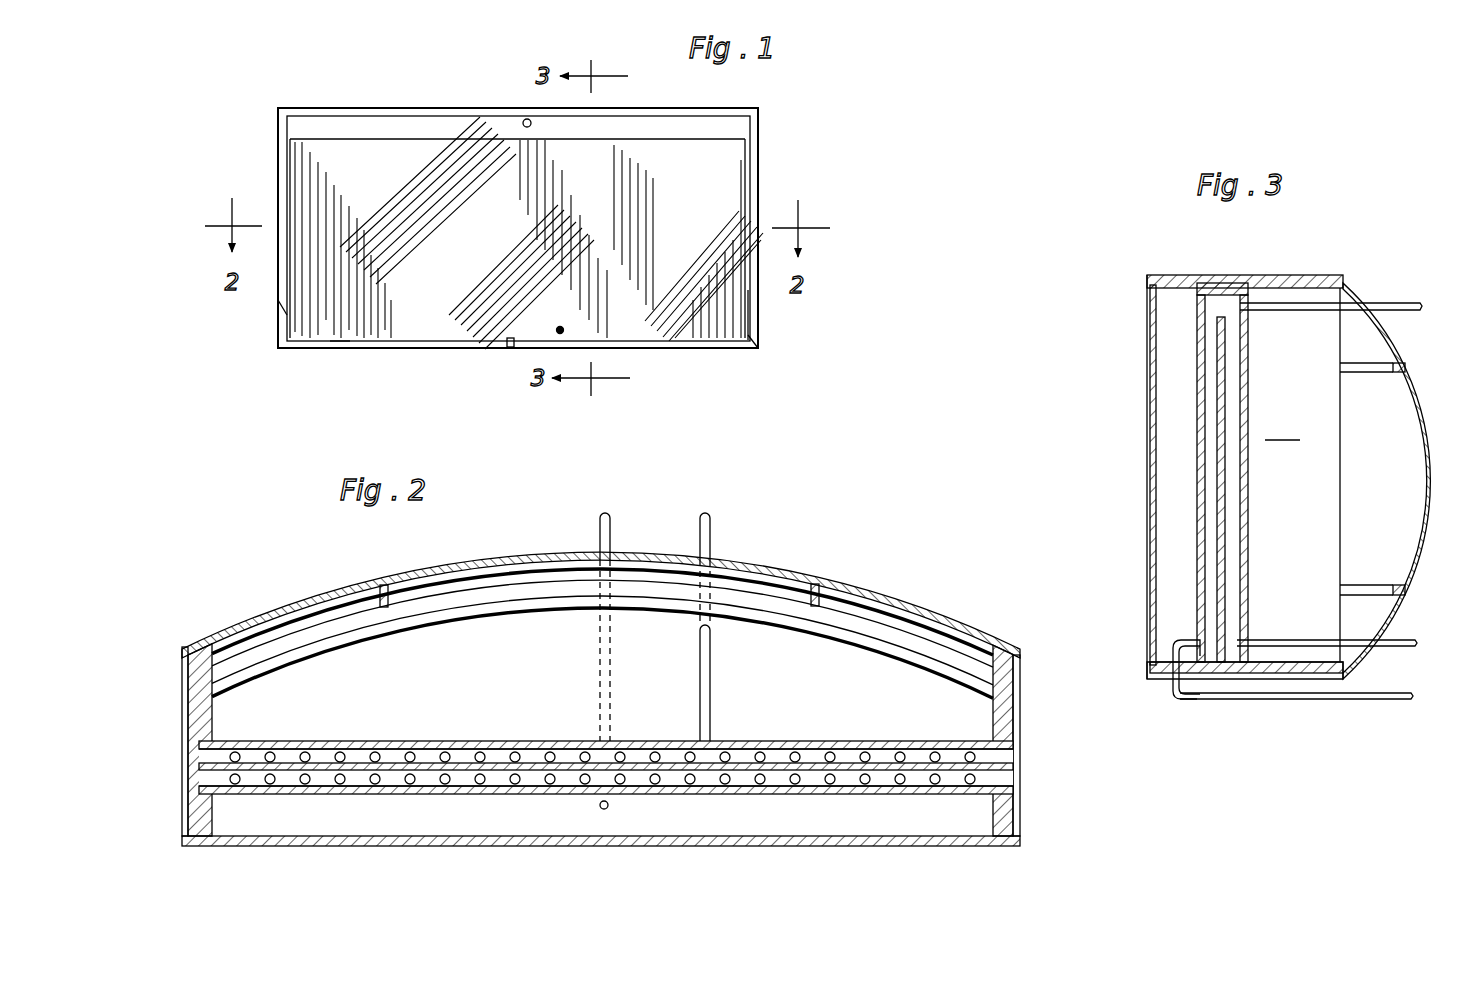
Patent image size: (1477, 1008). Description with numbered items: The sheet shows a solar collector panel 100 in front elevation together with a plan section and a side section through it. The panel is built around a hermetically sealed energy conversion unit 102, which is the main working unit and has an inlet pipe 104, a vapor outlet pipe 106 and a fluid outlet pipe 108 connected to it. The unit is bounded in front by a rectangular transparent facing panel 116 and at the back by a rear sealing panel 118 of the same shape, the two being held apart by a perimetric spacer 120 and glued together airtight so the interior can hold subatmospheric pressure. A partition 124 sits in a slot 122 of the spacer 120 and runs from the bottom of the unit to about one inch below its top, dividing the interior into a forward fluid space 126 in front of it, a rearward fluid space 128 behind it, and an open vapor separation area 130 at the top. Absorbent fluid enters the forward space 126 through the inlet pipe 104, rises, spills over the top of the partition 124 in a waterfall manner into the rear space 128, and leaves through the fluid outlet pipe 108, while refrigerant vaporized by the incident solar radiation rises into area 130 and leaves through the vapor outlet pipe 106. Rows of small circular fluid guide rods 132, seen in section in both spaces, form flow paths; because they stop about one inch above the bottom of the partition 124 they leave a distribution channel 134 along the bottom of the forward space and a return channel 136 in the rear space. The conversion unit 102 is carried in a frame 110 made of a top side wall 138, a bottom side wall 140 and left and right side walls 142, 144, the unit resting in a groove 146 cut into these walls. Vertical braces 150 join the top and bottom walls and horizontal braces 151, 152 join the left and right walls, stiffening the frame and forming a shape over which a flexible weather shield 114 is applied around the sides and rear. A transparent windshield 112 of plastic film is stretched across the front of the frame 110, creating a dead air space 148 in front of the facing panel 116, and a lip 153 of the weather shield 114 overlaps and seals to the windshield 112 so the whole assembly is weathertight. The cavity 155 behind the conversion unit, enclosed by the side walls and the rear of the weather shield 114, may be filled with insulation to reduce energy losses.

In FIG. 1, the solar collector panel 100 is at (772, 166).
In FIG. 2, the solar collector panel 100 is at (832, 568).
In FIG. 3, the solar collector panel 100 is at (1377, 280).
In FIG. 2, the hermetically sealed energy conversion unit 102 is at (810, 742).
In FIG. 3, the hermetically sealed energy conversion unit 102 is at (1252, 410).
In FIG. 1, the inlet pipe 104 is at (506, 345).
In FIG. 2, the inlet pipe 104 is at (612, 524).
In FIG. 3, the inlet pipe 104 is at (1338, 699).
In FIG. 1, the vapor outlet pipe 106 is at (525, 117).
In FIG. 3, the vapor outlet pipe 106 is at (1420, 308).
In FIG. 1, the fluid outlet pipe 108 is at (558, 333).
In FIG. 2, the fluid outlet pipe 108 is at (712, 527).
In FIG. 3, the fluid outlet pipe 108 is at (1400, 646).
In FIG. 1, the frame 110 is at (762, 200).
In FIG. 2, the frame 110 is at (633, 789).
In FIG. 3, the frame 110 is at (1277, 449).
In FIG. 1, the transparent windshield 112 is at (725, 290).
In FIG. 2, the transparent windshield 112 is at (918, 846).
In FIG. 3, the transparent windshield 112 is at (1150, 488).
In FIG. 2, the flexible weather shield 114 is at (948, 628).
In FIG. 3, the flexible weather shield 114 is at (1422, 528).
In FIG. 2, the facing panel 116 is at (812, 790).
In FIG. 3, the facing panel 116 is at (1200, 368).
In FIG. 2, the rear sealing panel 118 is at (440, 747).
In FIG. 2, the perimetric spacer 120 is at (205, 757).
In FIG. 3, the perimetric spacer 120 is at (1222, 283).
In FIG. 2, the slot 122 is at (1018, 758).
In FIG. 3, the slot 122 is at (1200, 668).
In FIG. 1, the partition 124 is at (735, 152).
In FIG. 2, the partition 124 is at (516, 758).
In FIG. 3, the partition 124 is at (1200, 412).
In FIG. 2, the forward fluid space 126 is at (435, 795).
In FIG. 3, the forward fluid space 126 is at (1207, 580).
In FIG. 2, the rearward fluid space 128 is at (880, 748).
In FIG. 3, the rearward fluid space 128 is at (1232, 529).
In FIG. 3, the vapor separation area 130 is at (1200, 285).
In FIG. 2, the fluid guide rods 132 is at (338, 755).
In FIG. 3, the fluid guide rods 132 is at (1205, 332).
In FIG. 3, the distribution channel 134 is at (1175, 675).
In FIG. 3, the return channel 136 is at (1238, 662).
In FIG. 1, the top side wall 138 is at (384, 112).
In FIG. 3, the top side wall 138 is at (1270, 285).
In FIG. 1, the bottom side wall 140 is at (345, 341).
In FIG. 3, the bottom side wall 140 is at (1290, 678).
In FIG. 1, the left side wall 142 is at (744, 338).
In FIG. 2, the left side wall 142 is at (1010, 680).
In FIG. 1, the right side wall 144 is at (286, 312).
In FIG. 2, the right side wall 144 is at (200, 680).
In FIG. 3, the right side wall 144 is at (1300, 475).
In FIG. 2, the groove 146 is at (1018, 794).
In FIG. 2, the dead air space 148 is at (787, 818).
In FIG. 2, the vertical brace 150 is at (385, 600).
In FIG. 3, the horizontal brace 151 is at (1405, 368).
In FIG. 2, the horizontal brace 152 is at (790, 568).
In FIG. 3, the horizontal brace 152 is at (1428, 478).
In FIG. 2, the lip 153 is at (1005, 848).
In FIG. 3, the lip 153 is at (1147, 280).
In FIG. 2, the cavity 155 is at (495, 632).
In FIG. 3, the cavity 155 is at (1397, 430).